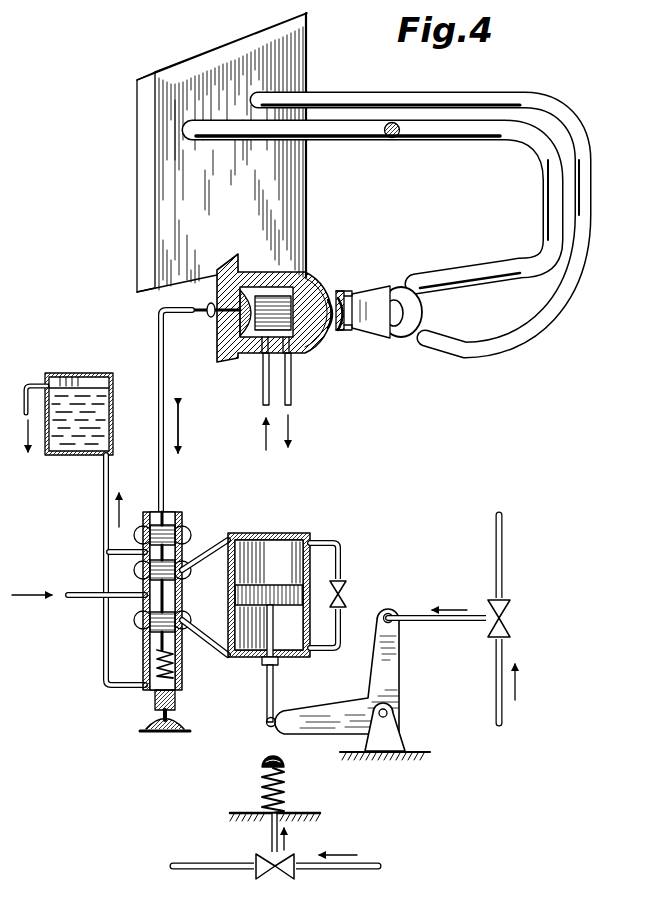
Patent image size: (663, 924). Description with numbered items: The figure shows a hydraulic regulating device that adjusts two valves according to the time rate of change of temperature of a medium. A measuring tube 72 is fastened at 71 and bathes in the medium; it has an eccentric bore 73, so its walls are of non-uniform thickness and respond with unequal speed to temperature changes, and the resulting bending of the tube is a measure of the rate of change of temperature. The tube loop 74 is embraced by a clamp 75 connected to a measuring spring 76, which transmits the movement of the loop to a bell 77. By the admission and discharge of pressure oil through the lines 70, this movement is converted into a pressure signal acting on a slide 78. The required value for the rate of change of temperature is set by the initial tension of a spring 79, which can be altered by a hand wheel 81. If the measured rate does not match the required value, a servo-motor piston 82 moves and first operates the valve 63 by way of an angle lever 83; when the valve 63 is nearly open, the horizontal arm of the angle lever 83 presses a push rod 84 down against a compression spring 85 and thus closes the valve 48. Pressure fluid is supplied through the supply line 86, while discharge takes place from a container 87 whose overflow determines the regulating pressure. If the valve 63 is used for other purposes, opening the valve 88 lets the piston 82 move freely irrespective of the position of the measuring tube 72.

The lines 70 is at (265, 378).
The fastening point 71 is at (308, 55).
The measuring tube 72 is at (548, 112).
The eccentric bore 73 is at (397, 139).
The tube loop 74 is at (392, 343).
The clamp 75 is at (378, 290).
The measuring spring 76 is at (331, 320).
The bell 77 is at (316, 297).
The slide 78 is at (163, 535).
The spring 79 is at (174, 668).
The hand wheel 81 is at (160, 731).
The servo-motor piston 82 is at (262, 595).
The angle lever 83 is at (392, 677).
The push rod 84 is at (263, 761).
The compression spring 85 is at (286, 792).
The supply line 86 is at (80, 600).
The container 87 is at (66, 456).
The valve 88 is at (348, 593).
The valve 63 is at (507, 630).
The valve 48 is at (278, 881).